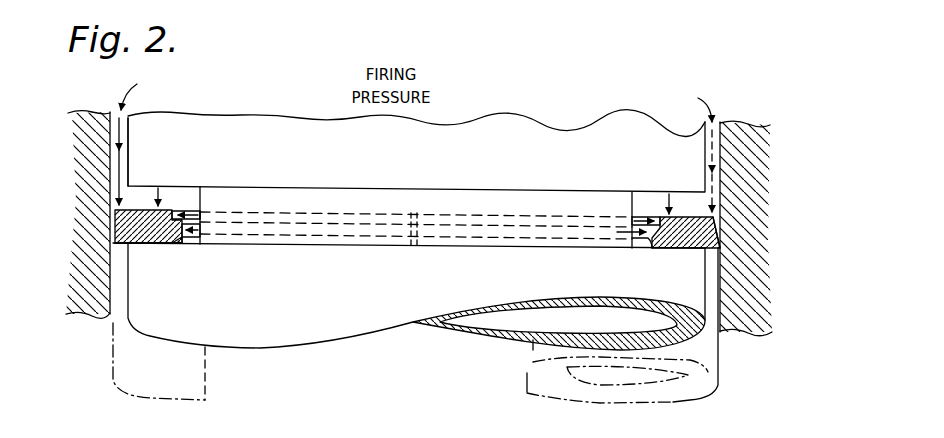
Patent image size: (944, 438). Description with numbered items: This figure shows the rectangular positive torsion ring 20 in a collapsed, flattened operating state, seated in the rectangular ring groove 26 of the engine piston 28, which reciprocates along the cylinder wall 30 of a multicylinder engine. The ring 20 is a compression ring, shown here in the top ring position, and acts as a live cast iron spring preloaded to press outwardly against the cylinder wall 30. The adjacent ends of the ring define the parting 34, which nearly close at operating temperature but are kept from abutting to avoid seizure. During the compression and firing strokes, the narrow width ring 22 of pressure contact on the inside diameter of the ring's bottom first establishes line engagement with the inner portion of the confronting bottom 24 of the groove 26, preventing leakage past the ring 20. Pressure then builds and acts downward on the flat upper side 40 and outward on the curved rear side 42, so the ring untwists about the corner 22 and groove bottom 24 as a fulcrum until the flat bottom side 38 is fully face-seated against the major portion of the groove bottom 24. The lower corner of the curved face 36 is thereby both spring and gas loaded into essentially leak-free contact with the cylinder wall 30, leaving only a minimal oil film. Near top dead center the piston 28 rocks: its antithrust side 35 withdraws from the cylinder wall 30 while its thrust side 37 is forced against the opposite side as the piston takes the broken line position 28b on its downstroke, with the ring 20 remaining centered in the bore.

The positive torsion ring 20 is at (125, 230).
The narrow width ring of pressure contact 22 is at (177, 245).
The bottom of ring groove 24 is at (643, 247).
The rectangular ring groove 26 is at (137, 197).
The engine piston 28 is at (330, 328).
The broken line position of piston 28b is at (722, 358).
The cylinder wall 30 is at (128, 120).
The parting 34 is at (414, 213).
The antithrust side of piston 35 is at (113, 285).
The curved face 36 is at (716, 223).
The thrust side of piston 37 is at (728, 287).
The bottom side of ring 38 is at (157, 245).
The flat upper side of ring 40 is at (160, 209).
The curved rear side of ring 42 is at (203, 216).